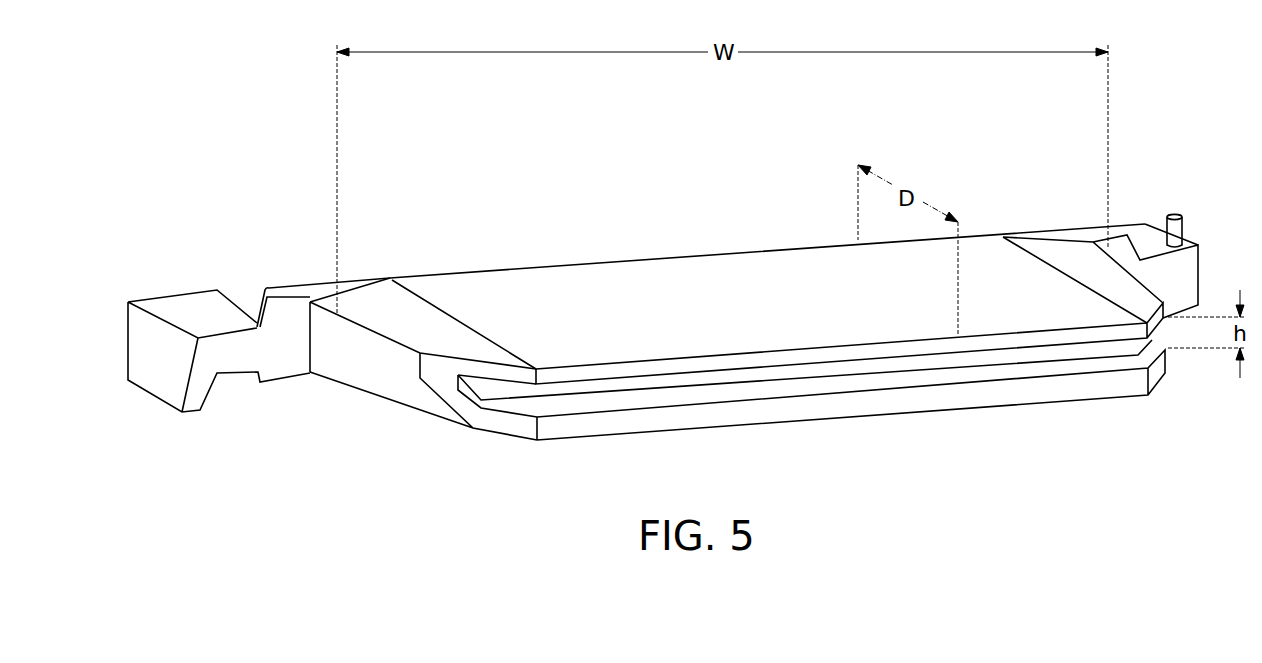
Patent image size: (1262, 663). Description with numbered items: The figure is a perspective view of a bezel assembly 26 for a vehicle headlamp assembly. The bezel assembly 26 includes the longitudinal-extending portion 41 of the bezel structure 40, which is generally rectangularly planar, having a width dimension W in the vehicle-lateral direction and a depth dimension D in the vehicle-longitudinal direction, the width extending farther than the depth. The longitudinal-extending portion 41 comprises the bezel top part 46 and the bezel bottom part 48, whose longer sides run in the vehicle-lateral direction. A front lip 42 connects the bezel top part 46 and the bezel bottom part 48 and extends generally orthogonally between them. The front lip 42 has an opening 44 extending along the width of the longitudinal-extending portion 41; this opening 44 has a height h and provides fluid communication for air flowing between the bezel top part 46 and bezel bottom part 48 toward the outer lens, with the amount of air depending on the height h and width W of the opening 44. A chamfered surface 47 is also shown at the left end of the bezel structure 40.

The bezel assembly 26 is at (190, 128).
The bezel structure 40 is at (382, 374).
The longitudinal-extending portion 41 is at (593, 286).
The front lip 42 is at (708, 418).
The opening 44 is at (580, 402).
The bezel top part 46 is at (793, 300).
The chamfered surface 47 is at (402, 312).
The bezel bottom part 48 is at (1063, 252).